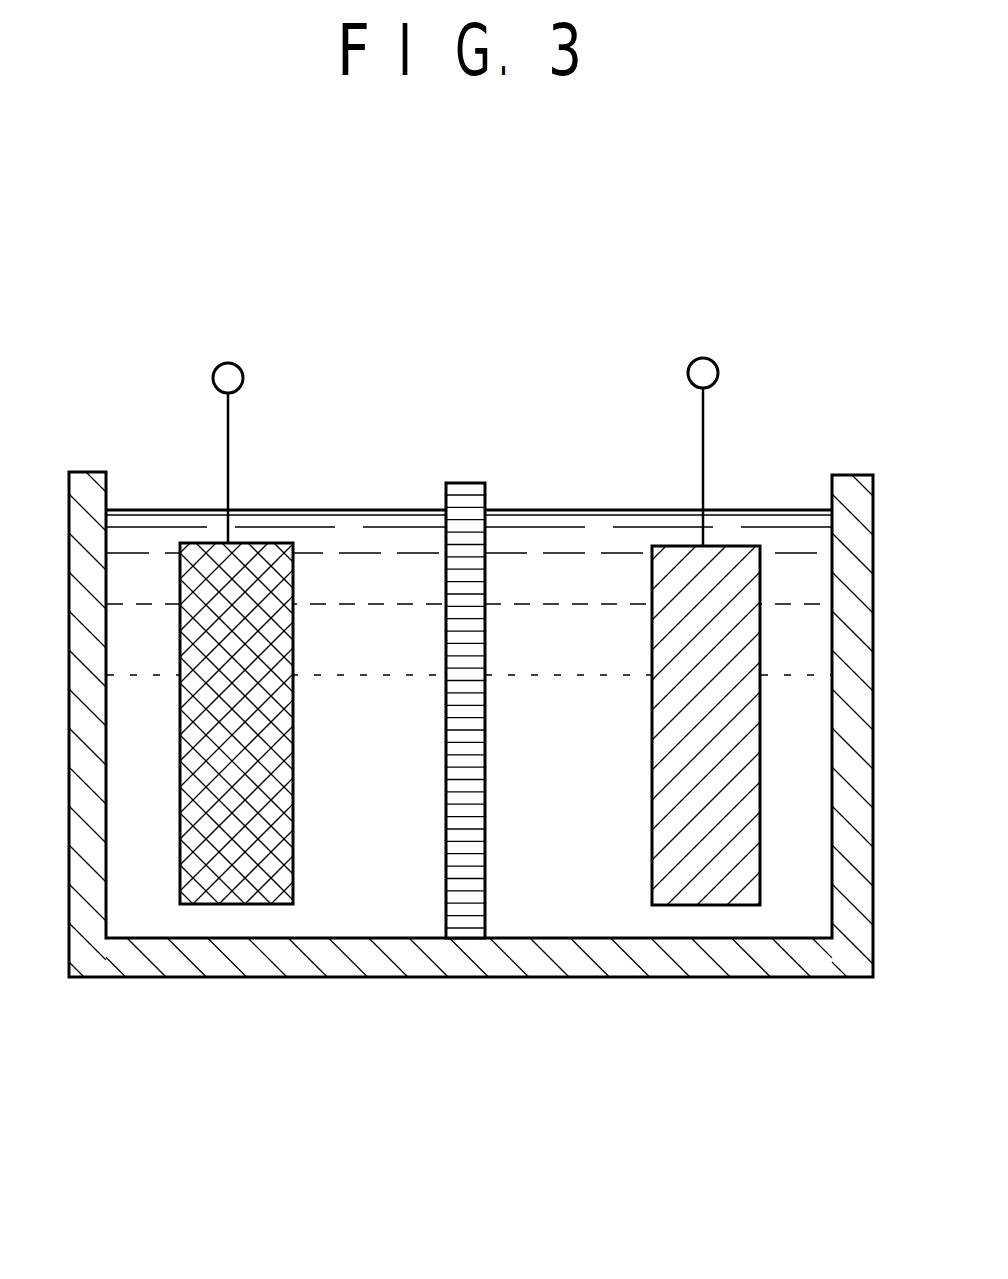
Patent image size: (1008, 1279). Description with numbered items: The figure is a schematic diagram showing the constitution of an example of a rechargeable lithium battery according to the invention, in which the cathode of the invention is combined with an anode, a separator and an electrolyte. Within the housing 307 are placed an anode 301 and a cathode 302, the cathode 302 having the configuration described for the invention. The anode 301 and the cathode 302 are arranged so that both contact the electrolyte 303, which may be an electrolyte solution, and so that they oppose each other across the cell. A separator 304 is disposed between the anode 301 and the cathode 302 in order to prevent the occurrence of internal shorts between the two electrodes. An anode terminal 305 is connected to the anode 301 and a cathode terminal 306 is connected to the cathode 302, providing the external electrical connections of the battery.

The anode 301 is at (230, 890).
The cathode 302 is at (715, 890).
The electrolyte 303 is at (543, 910).
The separator 304 is at (465, 483).
The anode terminal 305 is at (228, 363).
The cathode terminal 306 is at (703, 358).
The housing 307 is at (100, 960).